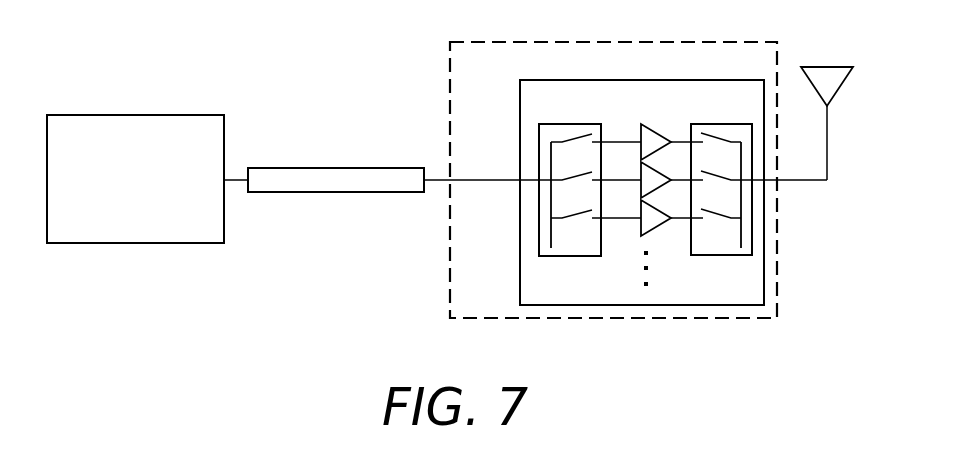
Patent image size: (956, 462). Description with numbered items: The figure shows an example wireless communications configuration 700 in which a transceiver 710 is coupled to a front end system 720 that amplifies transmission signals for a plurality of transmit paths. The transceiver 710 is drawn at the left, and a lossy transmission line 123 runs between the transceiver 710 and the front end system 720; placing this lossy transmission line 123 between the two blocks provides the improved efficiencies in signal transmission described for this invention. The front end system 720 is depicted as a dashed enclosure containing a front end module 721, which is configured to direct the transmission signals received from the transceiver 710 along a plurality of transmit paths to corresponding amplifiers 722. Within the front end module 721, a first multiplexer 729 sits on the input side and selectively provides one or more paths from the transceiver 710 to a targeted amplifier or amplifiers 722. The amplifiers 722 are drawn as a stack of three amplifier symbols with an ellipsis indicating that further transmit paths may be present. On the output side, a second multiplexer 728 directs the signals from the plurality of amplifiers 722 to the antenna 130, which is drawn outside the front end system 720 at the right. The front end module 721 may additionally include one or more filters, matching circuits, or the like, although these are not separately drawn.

The wireless communications configuration 700 is at (190, 58).
The transceiver 710 is at (135, 115).
The lossy transmission line 123 is at (340, 168).
The front end system 720 is at (510, 42).
The front end module 721 is at (520, 203).
The amplifiers 722 is at (653, 116).
The second multiplexer 728 is at (732, 257).
The first multiplexer 729 is at (562, 256).
The antenna 130 is at (823, 67).